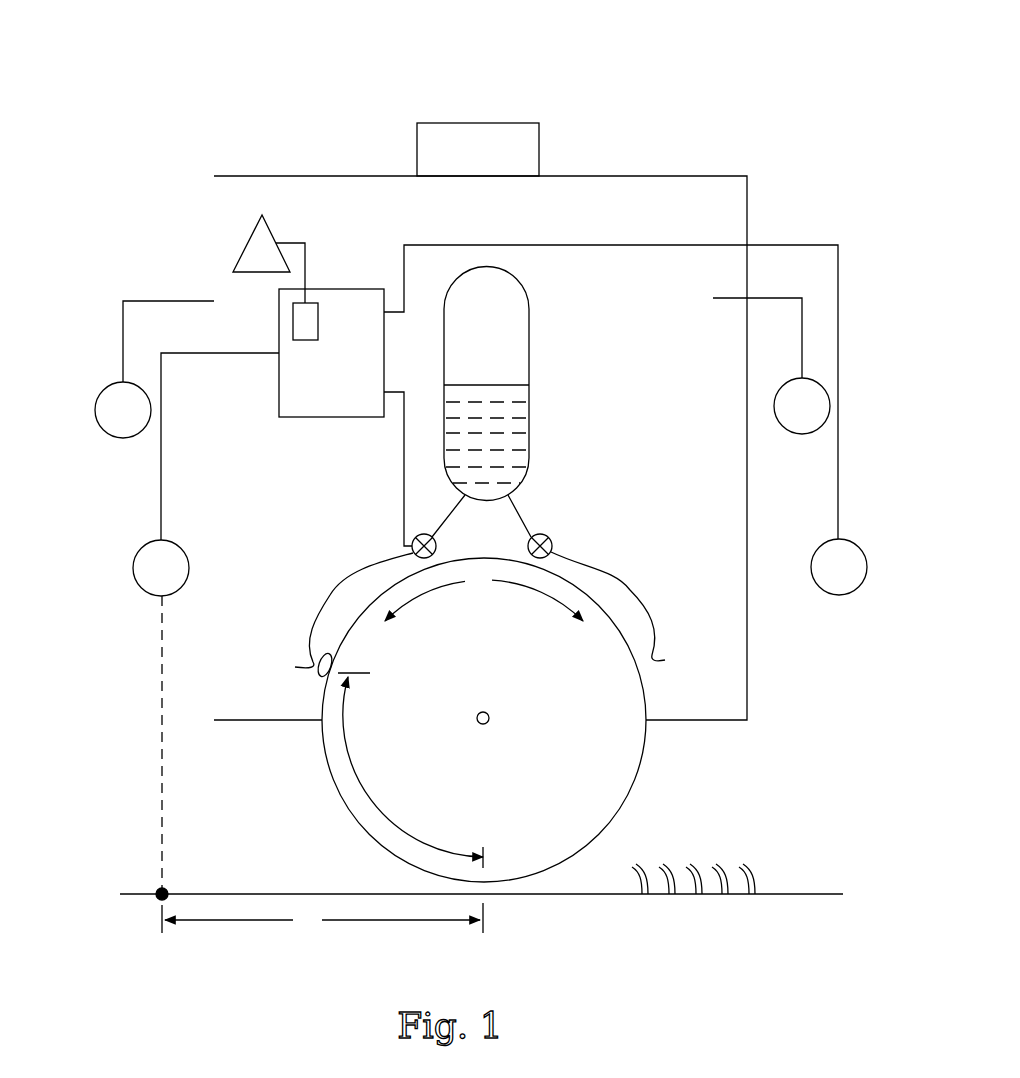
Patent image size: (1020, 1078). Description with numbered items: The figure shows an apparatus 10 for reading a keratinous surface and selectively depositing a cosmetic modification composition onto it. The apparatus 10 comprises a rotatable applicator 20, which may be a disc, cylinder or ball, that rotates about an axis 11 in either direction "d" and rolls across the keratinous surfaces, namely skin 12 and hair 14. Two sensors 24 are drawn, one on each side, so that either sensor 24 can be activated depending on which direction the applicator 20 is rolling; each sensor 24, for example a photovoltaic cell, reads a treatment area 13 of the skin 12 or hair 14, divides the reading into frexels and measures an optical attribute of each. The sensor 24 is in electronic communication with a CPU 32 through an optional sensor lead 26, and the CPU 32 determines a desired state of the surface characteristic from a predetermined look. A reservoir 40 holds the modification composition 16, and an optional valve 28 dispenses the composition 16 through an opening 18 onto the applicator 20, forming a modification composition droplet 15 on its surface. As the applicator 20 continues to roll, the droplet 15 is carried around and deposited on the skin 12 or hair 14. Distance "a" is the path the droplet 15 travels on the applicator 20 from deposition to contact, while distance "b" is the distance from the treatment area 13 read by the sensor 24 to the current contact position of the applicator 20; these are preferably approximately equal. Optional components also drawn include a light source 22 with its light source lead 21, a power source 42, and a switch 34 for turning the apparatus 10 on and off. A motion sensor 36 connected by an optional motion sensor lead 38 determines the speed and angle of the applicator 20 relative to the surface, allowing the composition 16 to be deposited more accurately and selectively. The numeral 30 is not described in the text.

The apparatus 10 is at (698, 115).
The axis 11 is at (488, 706).
The skin 12 is at (783, 892).
The treatment area 13 is at (162, 886).
The hair 14 is at (725, 867).
The modification composition droplet 15 is at (320, 677).
The modification composition 16 is at (513, 433).
The opening 18 is at (296, 667).
The applicator 20 is at (649, 786).
The light source lead 21 is at (123, 325).
The light source 22 is at (96, 410).
The sensor 24 is at (137, 557).
The sensor lead 26 is at (161, 513).
The valve 28 is at (422, 533).
The reservoir housing 30 is at (403, 463).
The CPU 32 is at (278, 388).
The switch 34 is at (480, 123).
The motion sensor 36 is at (247, 248).
The motion sensor lead 38 is at (293, 243).
The reservoir 40 is at (528, 370).
The power source 42 is at (310, 320).